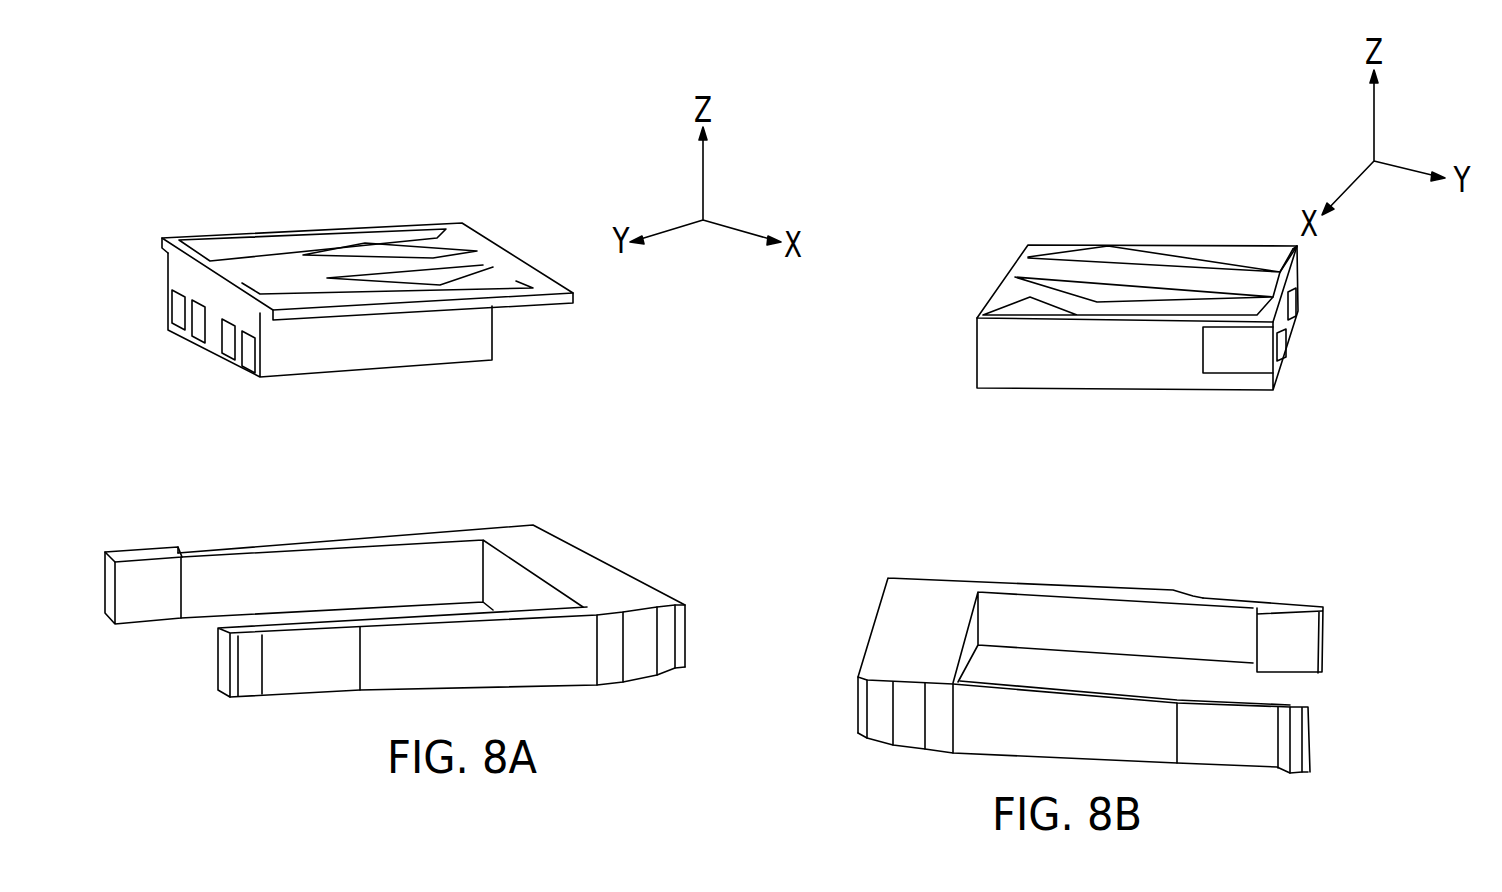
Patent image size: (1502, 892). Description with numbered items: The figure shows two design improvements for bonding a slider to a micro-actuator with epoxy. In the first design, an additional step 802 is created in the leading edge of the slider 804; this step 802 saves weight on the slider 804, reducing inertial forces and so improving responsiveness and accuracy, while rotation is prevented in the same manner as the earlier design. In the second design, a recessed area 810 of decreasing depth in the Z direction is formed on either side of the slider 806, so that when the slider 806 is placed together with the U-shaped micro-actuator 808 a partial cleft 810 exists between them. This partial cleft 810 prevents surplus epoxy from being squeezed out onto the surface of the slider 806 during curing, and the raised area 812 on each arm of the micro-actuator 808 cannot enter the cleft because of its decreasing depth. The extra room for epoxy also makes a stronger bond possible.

In FIG. 8A, the step 802 is at (393, 262).
In FIG. 8A, the slider 804 is at (198, 280).
In FIG. 8B, the slider 806 is at (1113, 295).
In FIG. 8B, the micro-actuator 808 is at (1112, 652).
In FIG. 8B, the recessed area 810 is at (1280, 246).
In FIG. 8B, the raised area 812 is at (1280, 652).